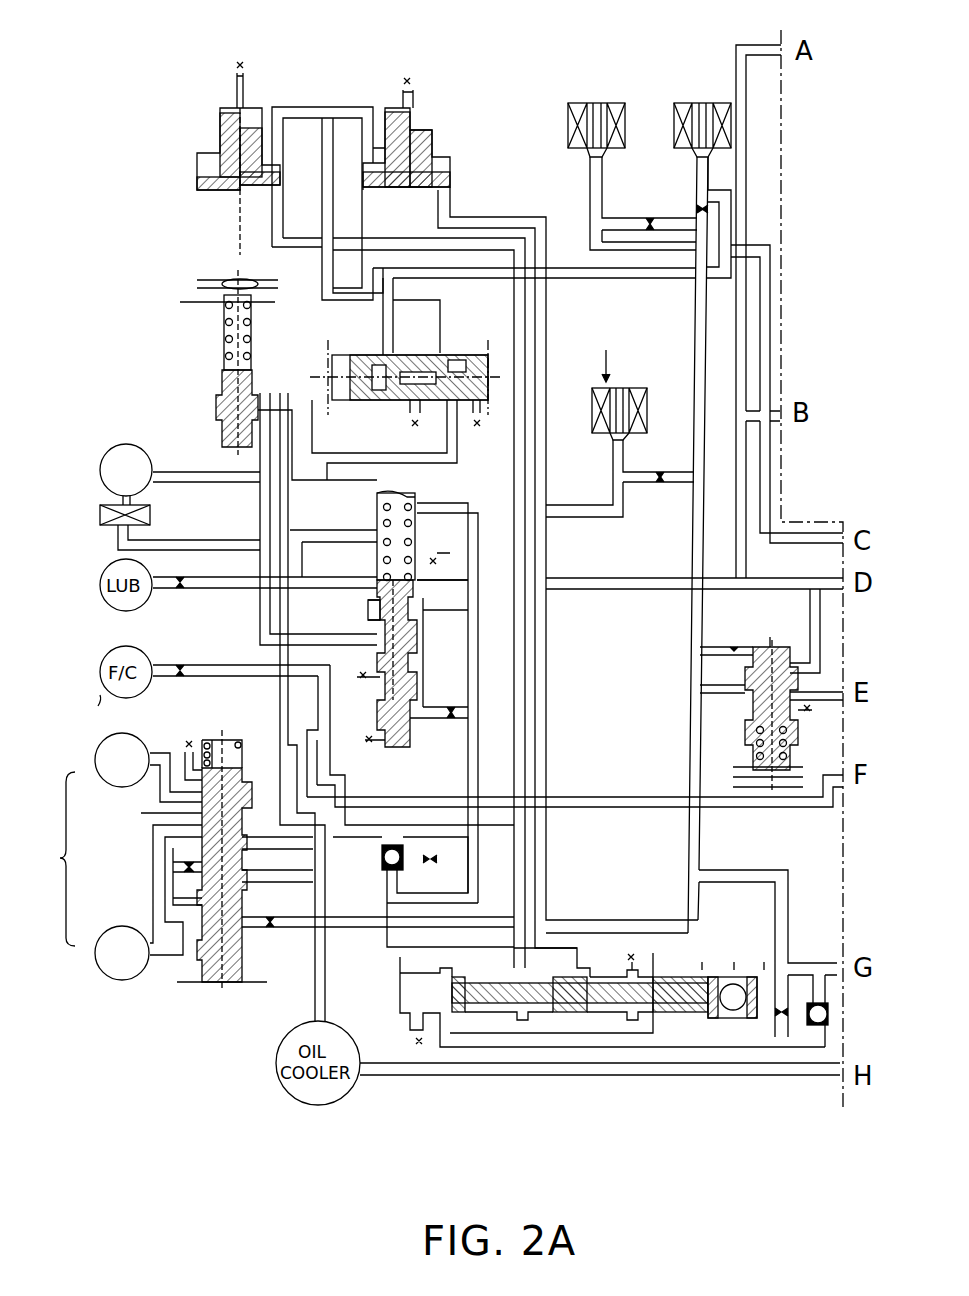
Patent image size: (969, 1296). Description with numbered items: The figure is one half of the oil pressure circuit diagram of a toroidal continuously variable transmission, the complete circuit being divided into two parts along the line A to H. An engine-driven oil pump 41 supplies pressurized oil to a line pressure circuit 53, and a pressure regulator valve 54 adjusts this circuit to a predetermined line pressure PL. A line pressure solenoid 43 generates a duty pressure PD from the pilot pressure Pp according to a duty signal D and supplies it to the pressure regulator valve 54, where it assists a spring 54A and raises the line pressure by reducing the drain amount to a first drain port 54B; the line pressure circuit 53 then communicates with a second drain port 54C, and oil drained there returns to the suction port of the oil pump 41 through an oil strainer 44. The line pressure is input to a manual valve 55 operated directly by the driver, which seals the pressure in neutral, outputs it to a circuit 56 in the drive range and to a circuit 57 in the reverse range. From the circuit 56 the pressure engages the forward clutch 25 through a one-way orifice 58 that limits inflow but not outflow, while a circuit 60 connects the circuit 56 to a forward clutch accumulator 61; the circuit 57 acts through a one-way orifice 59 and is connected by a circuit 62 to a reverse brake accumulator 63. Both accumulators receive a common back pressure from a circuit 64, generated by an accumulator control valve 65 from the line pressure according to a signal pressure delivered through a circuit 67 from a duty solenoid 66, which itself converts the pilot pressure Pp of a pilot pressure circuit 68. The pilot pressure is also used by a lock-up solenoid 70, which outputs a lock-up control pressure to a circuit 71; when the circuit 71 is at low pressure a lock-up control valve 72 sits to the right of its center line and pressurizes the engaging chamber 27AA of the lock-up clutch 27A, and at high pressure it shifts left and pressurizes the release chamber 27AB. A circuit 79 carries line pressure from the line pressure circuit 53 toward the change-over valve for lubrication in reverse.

The forward clutch 25 is at (100, 698).
The lock-up clutch 27A is at (78, 885).
The engaging chamber 27AA is at (115, 983).
The release chamber 27AB is at (108, 790).
The oil pump 41 is at (142, 448).
The line pressure solenoid 43 is at (632, 388).
The oil strainer 44 is at (158, 519).
The line pressure circuit 53 is at (297, 462).
The pressure regulator valve 54 is at (366, 562).
The spring 54A is at (376, 501).
The first drain port 54B is at (440, 575).
The second drain port 54C is at (370, 644).
The manual valve 55 is at (682, 957).
The circuit 56 is at (328, 774).
The circuit 57 is at (813, 975).
The one-way orifice 58 is at (382, 848).
The one-way orifice 59 is at (770, 645).
The circuit 60 is at (383, 238).
The forward clutch accumulator 61 is at (230, 200).
The circuit 62 is at (492, 215).
The reverse brake accumulator 63 is at (455, 153).
The circuit 64 is at (350, 106).
The accumulator control valve 65 is at (358, 350).
The duty solenoid 66 is at (684, 103).
The circuit 67 is at (571, 263).
The pilot pressure circuit 68 is at (706, 338).
The lock-up solenoid 70 is at (572, 103).
The circuit 71 is at (774, 266).
The lock-up control valve 72 is at (250, 950).
The circuit 79 is at (750, 146).